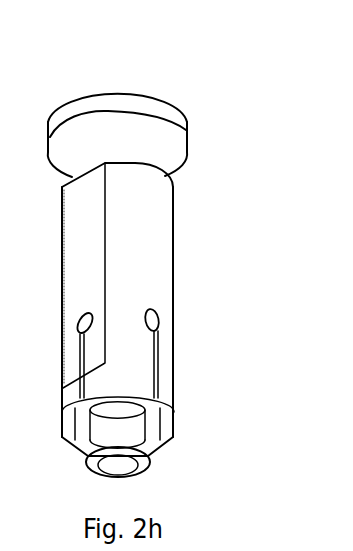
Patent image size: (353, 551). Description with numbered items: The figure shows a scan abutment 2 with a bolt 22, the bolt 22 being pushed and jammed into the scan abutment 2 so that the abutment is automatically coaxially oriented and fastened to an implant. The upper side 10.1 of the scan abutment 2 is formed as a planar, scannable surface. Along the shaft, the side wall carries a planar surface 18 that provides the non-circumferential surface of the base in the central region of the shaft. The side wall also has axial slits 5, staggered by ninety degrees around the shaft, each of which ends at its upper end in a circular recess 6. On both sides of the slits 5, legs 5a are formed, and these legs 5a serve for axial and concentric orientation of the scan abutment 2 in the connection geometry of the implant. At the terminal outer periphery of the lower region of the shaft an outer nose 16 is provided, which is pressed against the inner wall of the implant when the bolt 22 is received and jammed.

The bolt 22 is at (117, 112).
The upper side 10.1 is at (142, 164).
The planar surface 18 is at (78, 272).
The scan abutment 2 is at (155, 237).
The circular recesses 6 is at (158, 322).
The axial slits 5 is at (160, 372).
The legs 5a is at (118, 393).
The outer nose 16 is at (157, 467).